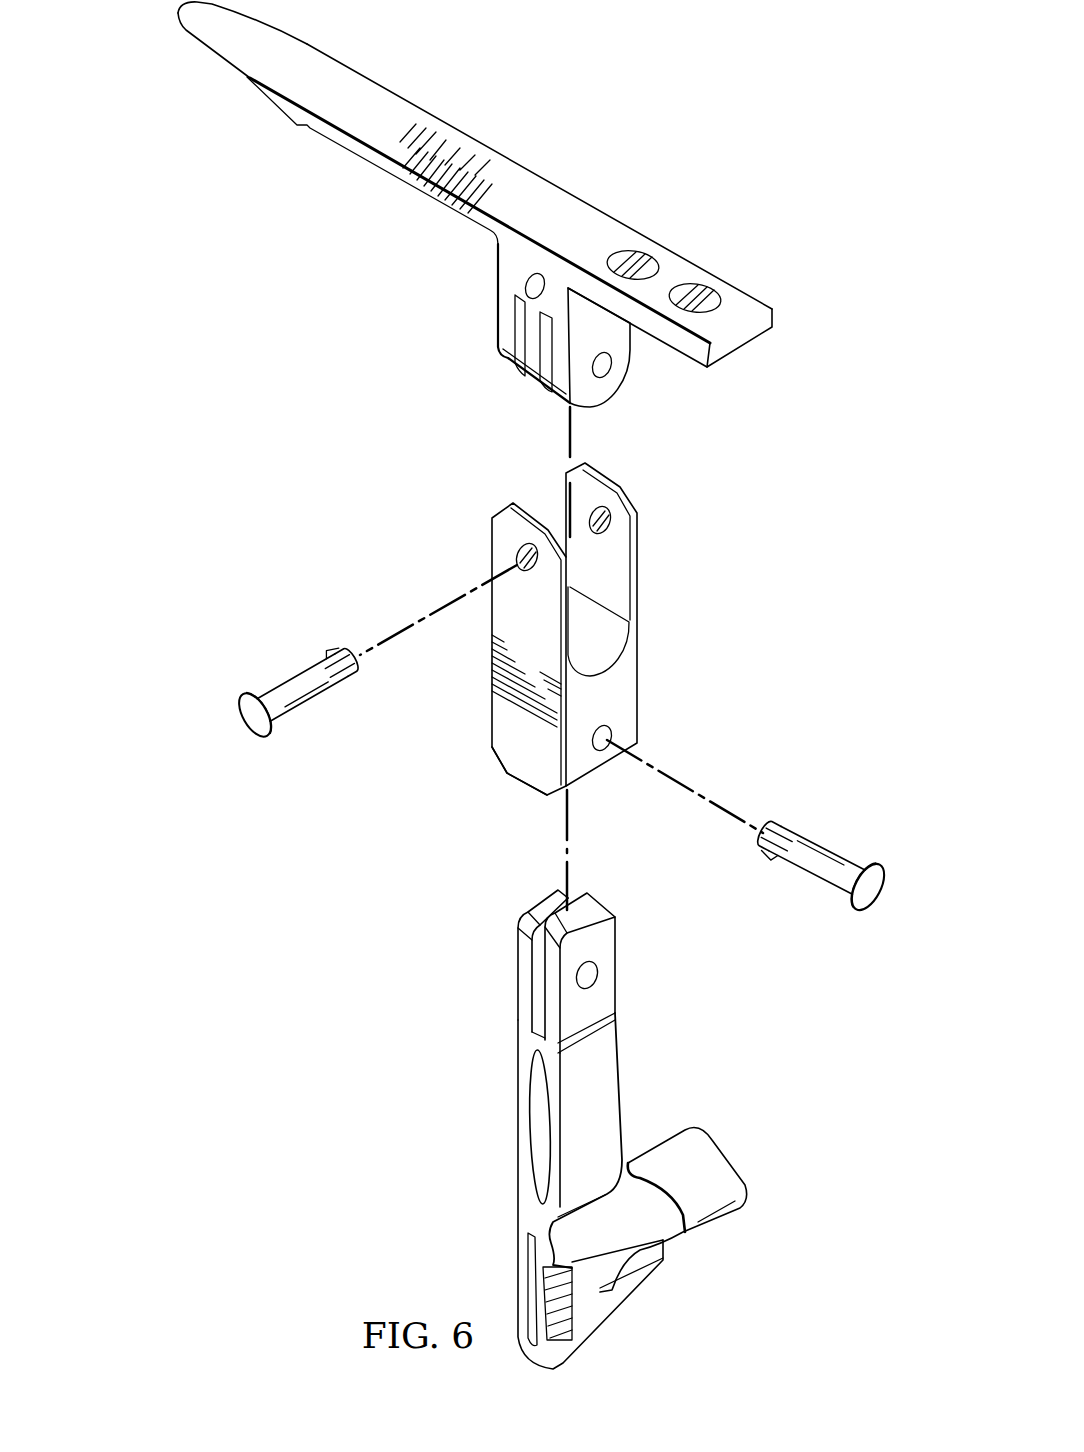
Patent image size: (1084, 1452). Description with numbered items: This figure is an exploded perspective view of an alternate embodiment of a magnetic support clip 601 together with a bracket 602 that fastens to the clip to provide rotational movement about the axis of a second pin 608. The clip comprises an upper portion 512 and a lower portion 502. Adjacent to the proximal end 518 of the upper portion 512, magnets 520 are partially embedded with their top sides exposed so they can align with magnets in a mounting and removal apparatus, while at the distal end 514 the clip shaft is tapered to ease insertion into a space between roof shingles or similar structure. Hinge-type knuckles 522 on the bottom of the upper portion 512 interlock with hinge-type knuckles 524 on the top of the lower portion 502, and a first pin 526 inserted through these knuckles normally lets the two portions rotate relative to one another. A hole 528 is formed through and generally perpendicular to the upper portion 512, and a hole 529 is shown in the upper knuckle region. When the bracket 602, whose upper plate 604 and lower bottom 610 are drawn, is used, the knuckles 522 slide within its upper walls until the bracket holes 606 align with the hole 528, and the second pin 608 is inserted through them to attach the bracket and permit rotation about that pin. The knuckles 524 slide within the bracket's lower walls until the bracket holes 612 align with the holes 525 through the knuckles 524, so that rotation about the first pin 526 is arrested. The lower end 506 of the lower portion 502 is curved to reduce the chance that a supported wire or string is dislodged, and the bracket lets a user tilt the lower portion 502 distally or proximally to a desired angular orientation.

The clip 601 is at (806, 124).
The distal end 514 is at (200, 22).
The upper portion 512 is at (398, 165).
The proximal end 518 is at (742, 343).
The magnets 520 is at (628, 252).
The hole 528 is at (525, 285).
The hinge-type knuckles 522 is at (500, 352).
The pivot hole 529 is at (612, 368).
The bracket 602 is at (564, 650).
The bracket plate 604 is at (636, 494).
The holes 606 is at (522, 555).
The holes 612 is at (610, 738).
The bracket bottom 610 is at (515, 784).
The second pin 608 is at (300, 683).
The first pin 526 is at (836, 850).
The lower portion 502 is at (564, 1129).
The hinge-type knuckles 524 is at (522, 960).
The holes 525 is at (596, 975).
The lower end 506 is at (715, 1157).